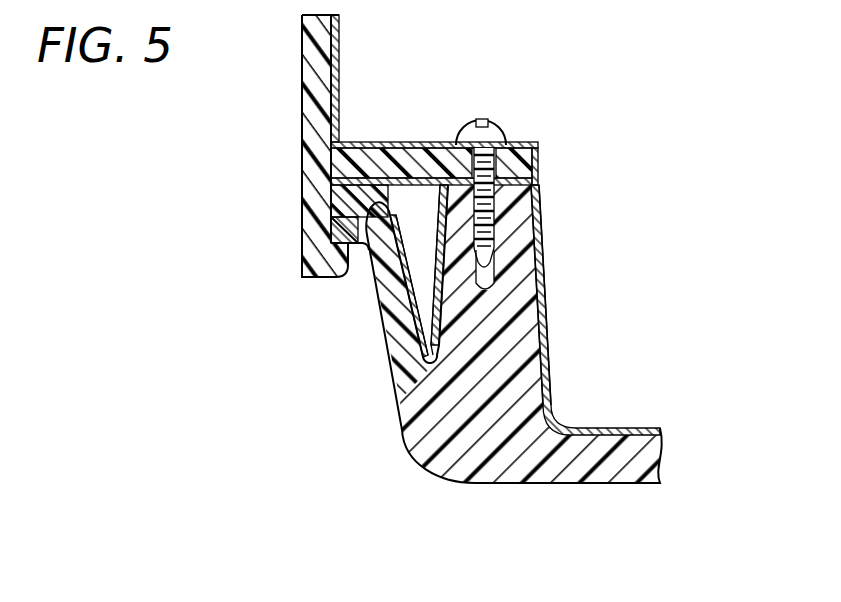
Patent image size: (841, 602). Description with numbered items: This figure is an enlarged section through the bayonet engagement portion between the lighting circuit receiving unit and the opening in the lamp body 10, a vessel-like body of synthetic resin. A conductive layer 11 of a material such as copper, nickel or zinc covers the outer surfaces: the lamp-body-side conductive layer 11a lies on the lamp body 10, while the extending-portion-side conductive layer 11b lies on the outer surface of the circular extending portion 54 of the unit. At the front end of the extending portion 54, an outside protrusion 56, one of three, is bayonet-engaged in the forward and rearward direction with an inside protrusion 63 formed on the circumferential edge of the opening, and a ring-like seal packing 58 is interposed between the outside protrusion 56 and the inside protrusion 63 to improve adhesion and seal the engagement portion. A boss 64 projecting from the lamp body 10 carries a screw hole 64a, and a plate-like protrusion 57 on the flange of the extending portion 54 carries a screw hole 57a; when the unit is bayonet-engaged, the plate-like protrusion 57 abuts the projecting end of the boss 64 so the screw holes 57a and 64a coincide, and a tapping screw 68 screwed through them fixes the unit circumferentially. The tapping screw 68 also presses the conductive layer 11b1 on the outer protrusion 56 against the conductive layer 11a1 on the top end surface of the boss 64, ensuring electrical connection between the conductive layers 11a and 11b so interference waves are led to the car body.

The lamp body 10 is at (605, 477).
The conductive layer 11 is at (510, 218).
The lamp-body-side conductive layer 11a is at (610, 310).
The extending-portion-side conductive layer 11b is at (476, 101).
The flange of outer panel 11a1 is at (541, 213).
The conductive layer on outer protrusion 11b1 is at (541, 185).
The extending portion 54 is at (300, 93).
The outside protrusion 56 is at (357, 260).
The plate-like protrusion 57 is at (466, 128).
The screw hole 57a is at (453, 132).
The ring-like seal packing 58 is at (333, 200).
The inside protrusion 63 is at (347, 232).
The boss 64 is at (497, 334).
The screw hole 64a is at (507, 270).
The tapping screw 68 is at (498, 127).